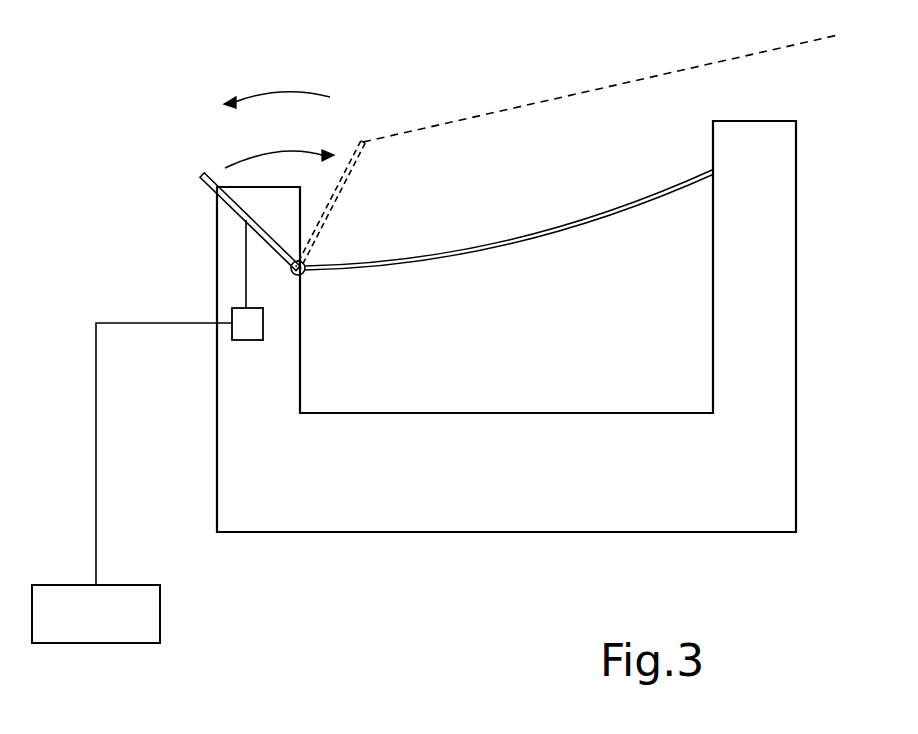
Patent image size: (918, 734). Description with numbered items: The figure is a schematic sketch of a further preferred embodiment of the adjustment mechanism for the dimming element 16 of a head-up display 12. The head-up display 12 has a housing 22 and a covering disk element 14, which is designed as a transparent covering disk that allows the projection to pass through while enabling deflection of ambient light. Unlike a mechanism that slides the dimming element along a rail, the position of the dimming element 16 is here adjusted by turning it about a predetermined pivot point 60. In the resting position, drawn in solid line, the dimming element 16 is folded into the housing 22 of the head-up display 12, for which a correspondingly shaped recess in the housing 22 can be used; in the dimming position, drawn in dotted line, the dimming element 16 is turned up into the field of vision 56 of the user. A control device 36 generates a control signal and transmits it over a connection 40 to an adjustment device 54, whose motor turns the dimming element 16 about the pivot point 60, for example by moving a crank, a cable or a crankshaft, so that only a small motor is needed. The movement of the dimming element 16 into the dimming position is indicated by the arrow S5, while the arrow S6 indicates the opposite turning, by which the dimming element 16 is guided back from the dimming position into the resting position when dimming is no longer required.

The head-up display 12 is at (471, 373).
The covering disk element 14 is at (575, 233).
The dimming element 16 is at (235, 213).
The housing 22 is at (217, 418).
The control device 36 is at (160, 612).
The signal line 40 is at (246, 258).
The adjustment device 54 is at (263, 325).
The field of vision 56 is at (596, 90).
The pivot point 60 is at (308, 262).
The moving step S5 is at (290, 150).
The return pivoting direction S6 is at (278, 92).